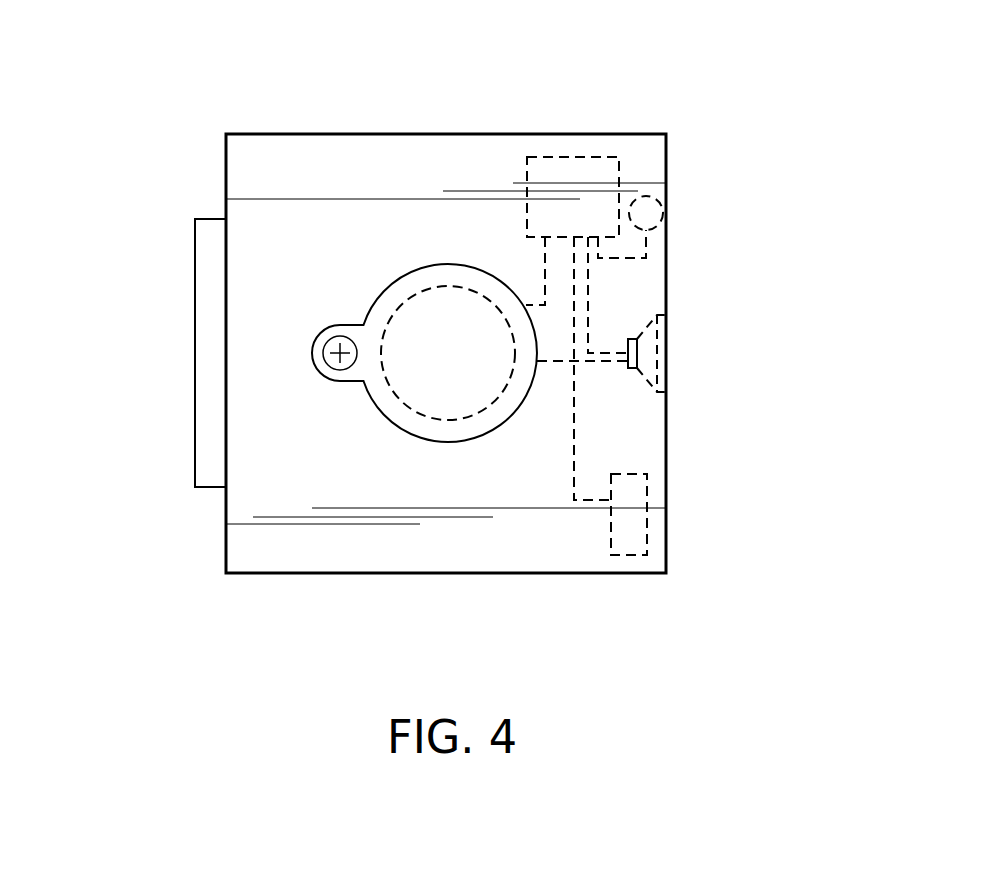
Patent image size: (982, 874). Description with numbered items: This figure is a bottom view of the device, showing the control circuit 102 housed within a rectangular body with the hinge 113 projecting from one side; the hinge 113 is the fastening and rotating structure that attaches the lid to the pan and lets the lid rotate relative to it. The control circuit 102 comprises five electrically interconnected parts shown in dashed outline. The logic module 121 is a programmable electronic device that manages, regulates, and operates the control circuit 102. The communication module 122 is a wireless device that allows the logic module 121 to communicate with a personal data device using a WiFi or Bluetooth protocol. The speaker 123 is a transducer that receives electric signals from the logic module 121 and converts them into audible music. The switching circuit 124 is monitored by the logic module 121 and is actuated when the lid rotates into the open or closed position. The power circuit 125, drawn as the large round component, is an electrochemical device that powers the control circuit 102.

The control circuit 102 is at (797, 643).
The hinge 113 is at (206, 386).
The logic module 121 is at (580, 173).
The communication module 122 is at (636, 489).
The speaker 123 is at (652, 350).
The switching circuit 124 is at (653, 213).
The power circuit 125 is at (446, 322).